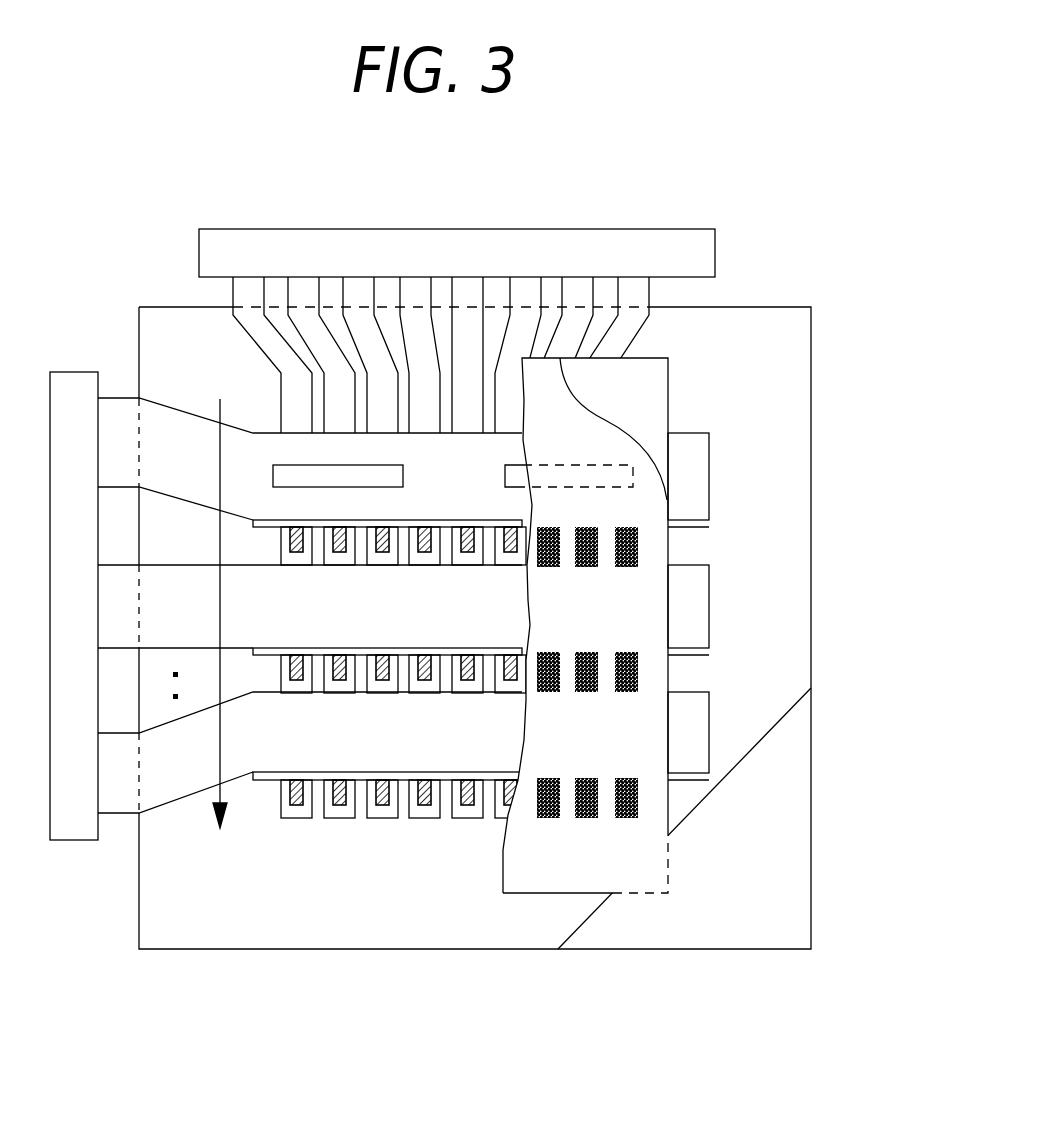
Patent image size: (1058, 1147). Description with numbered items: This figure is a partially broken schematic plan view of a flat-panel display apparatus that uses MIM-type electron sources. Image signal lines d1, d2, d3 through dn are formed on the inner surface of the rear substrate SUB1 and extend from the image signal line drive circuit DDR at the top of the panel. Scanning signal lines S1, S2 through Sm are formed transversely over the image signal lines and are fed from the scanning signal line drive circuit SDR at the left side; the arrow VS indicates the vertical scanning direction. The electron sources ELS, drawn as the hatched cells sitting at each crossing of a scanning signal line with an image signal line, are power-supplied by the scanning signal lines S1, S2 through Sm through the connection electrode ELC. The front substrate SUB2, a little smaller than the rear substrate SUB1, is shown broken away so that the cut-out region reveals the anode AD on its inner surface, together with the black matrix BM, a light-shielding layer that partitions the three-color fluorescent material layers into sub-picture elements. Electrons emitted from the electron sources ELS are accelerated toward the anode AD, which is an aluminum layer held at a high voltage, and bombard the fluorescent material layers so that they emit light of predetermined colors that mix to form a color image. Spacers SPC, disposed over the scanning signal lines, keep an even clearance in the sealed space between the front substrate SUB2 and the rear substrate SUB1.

The image signal line d1 is at (246, 292).
The image signal line d2 is at (302, 292).
The image signal line d3 is at (360, 292).
The image signal line dn is at (625, 337).
The image signal line drive circuit DDR is at (565, 250).
The scanning signal line drive circuit SDR is at (72, 835).
The spacer SPC is at (287, 473).
The anode AD is at (638, 397).
The connection electrode ELC is at (693, 527).
The black matrix BM is at (638, 603).
The scanning signal line S1 is at (310, 459).
The scanning signal line S2 is at (310, 606).
The scanning signal line Sm is at (310, 752).
The vertical scanning direction VS is at (218, 634).
The rear substrate SUB1 is at (190, 937).
The front substrate SUB2 is at (760, 932).
The electron sources ELS is at (298, 818).